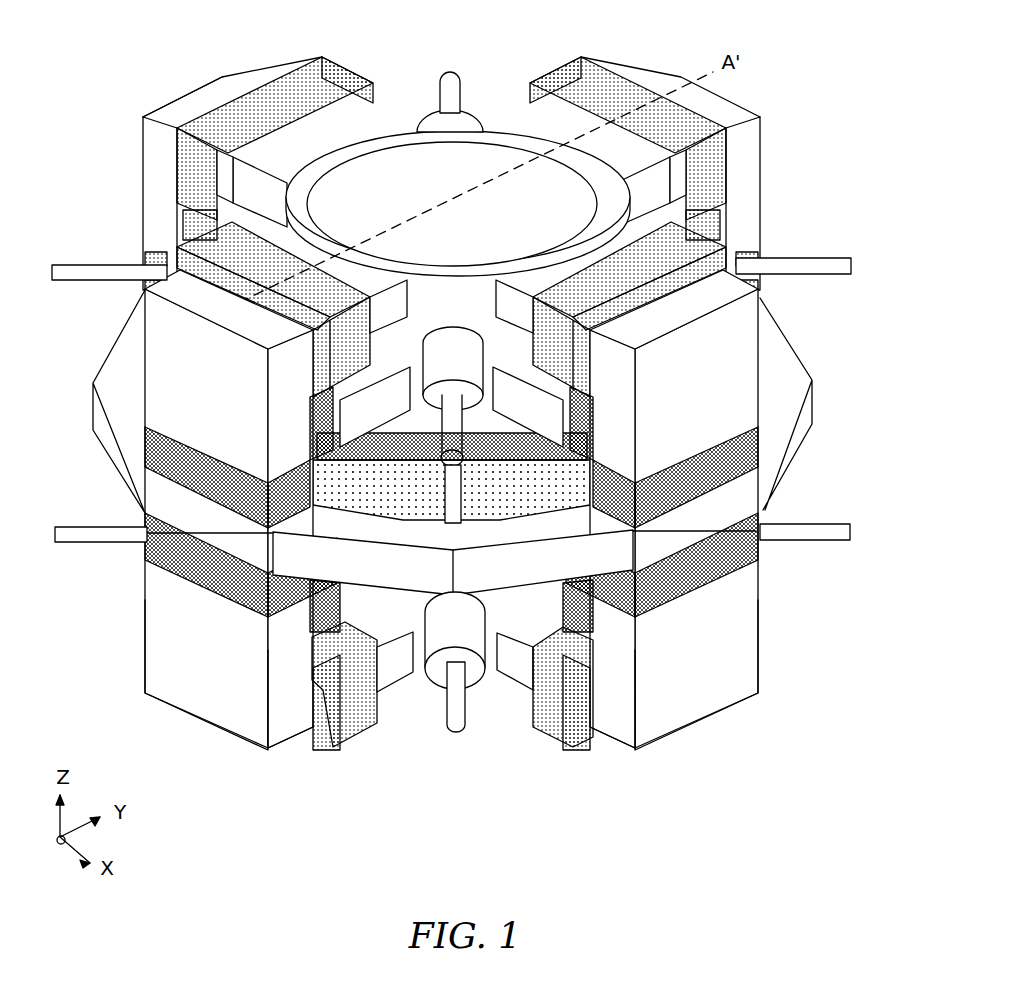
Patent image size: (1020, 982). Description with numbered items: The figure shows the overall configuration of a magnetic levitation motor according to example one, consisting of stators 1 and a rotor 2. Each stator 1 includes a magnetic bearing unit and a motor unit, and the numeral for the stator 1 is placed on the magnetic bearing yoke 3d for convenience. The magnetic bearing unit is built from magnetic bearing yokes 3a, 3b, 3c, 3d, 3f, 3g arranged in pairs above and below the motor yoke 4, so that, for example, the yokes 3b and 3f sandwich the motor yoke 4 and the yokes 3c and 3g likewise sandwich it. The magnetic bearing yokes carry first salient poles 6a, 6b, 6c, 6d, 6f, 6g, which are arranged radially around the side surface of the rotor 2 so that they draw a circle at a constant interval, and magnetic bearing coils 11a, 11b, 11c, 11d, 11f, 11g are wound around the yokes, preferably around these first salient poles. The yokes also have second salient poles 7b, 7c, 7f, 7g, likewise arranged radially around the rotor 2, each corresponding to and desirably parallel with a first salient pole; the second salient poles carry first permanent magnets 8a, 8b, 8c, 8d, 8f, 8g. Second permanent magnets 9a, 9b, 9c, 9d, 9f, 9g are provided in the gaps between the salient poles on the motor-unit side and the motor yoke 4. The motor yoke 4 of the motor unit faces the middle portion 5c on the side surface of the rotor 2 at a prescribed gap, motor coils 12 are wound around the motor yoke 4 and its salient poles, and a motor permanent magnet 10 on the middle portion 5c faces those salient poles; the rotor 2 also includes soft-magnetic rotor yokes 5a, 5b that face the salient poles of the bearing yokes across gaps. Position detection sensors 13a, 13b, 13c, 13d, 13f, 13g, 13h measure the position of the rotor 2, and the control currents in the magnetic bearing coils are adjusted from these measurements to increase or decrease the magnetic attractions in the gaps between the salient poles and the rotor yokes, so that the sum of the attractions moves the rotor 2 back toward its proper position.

The stator 1 is at (220, 78).
The rotor 2 is at (415, 132).
The magnetic bearing yoke 3a is at (738, 98).
The magnetic bearing yoke 3b is at (745, 333).
The magnetic bearing yoke 3c is at (157, 362).
The magnetic bearing yoke 3d is at (155, 107).
The magnetic bearing yoke 3f is at (717, 685).
The magnetic bearing yoke 3g is at (200, 682).
The motor yoke 4 is at (813, 400).
The disk 5a is at (483, 167).
The lower shaft 5b is at (488, 620).
The middle portion 5c is at (480, 420).
The first salient pole 6a is at (573, 130).
The first salient pole 6b is at (620, 245).
The first salient pole 6c is at (283, 245).
The first salient pole 6d is at (330, 130).
The first salient pole 6f is at (517, 673).
The first salient pole 6g is at (410, 673).
The second salient pole 7b is at (626, 483).
The second salient pole 7c is at (277, 483).
The second salient pole 7f is at (633, 635).
The second salient pole 7g is at (270, 635).
The first permanent magnet 8a is at (668, 215).
The first permanent magnet 8b is at (518, 425).
The first permanent magnet 8c is at (385, 425).
The first permanent magnet 8d is at (235, 215).
The first permanent magnet 8f is at (603, 617).
The first permanent magnet 8g is at (303, 615).
The second permanent magnet 9a is at (737, 255).
The second permanent magnet 9b is at (590, 447).
The second permanent magnet 9c is at (313, 447).
The second permanent magnet 9d is at (167, 258).
The second permanent magnet 9f is at (635, 573).
The second permanent magnet 9g is at (268, 573).
The motor permanent magnet 10 is at (390, 537).
The magnetic bearing coil 11a is at (634, 100).
The magnetic bearing coil 11b is at (653, 257).
The magnetic bearing coil 11c is at (250, 257).
The magnetic bearing coil 11d is at (266, 103).
The magnetic bearing coil 11f is at (557, 713).
The magnetic bearing coil 11g is at (362, 705).
The motor coil 12 is at (437, 470).
The position detection sensor 13a is at (443, 132).
The position detection sensor 13b is at (813, 270).
The position detection sensor 13c is at (475, 458).
The position detection sensor 13d is at (80, 278).
The position detection sensor 13f is at (820, 530).
The position detection sensor 13g is at (440, 697).
The position detection sensor 13h is at (90, 545).